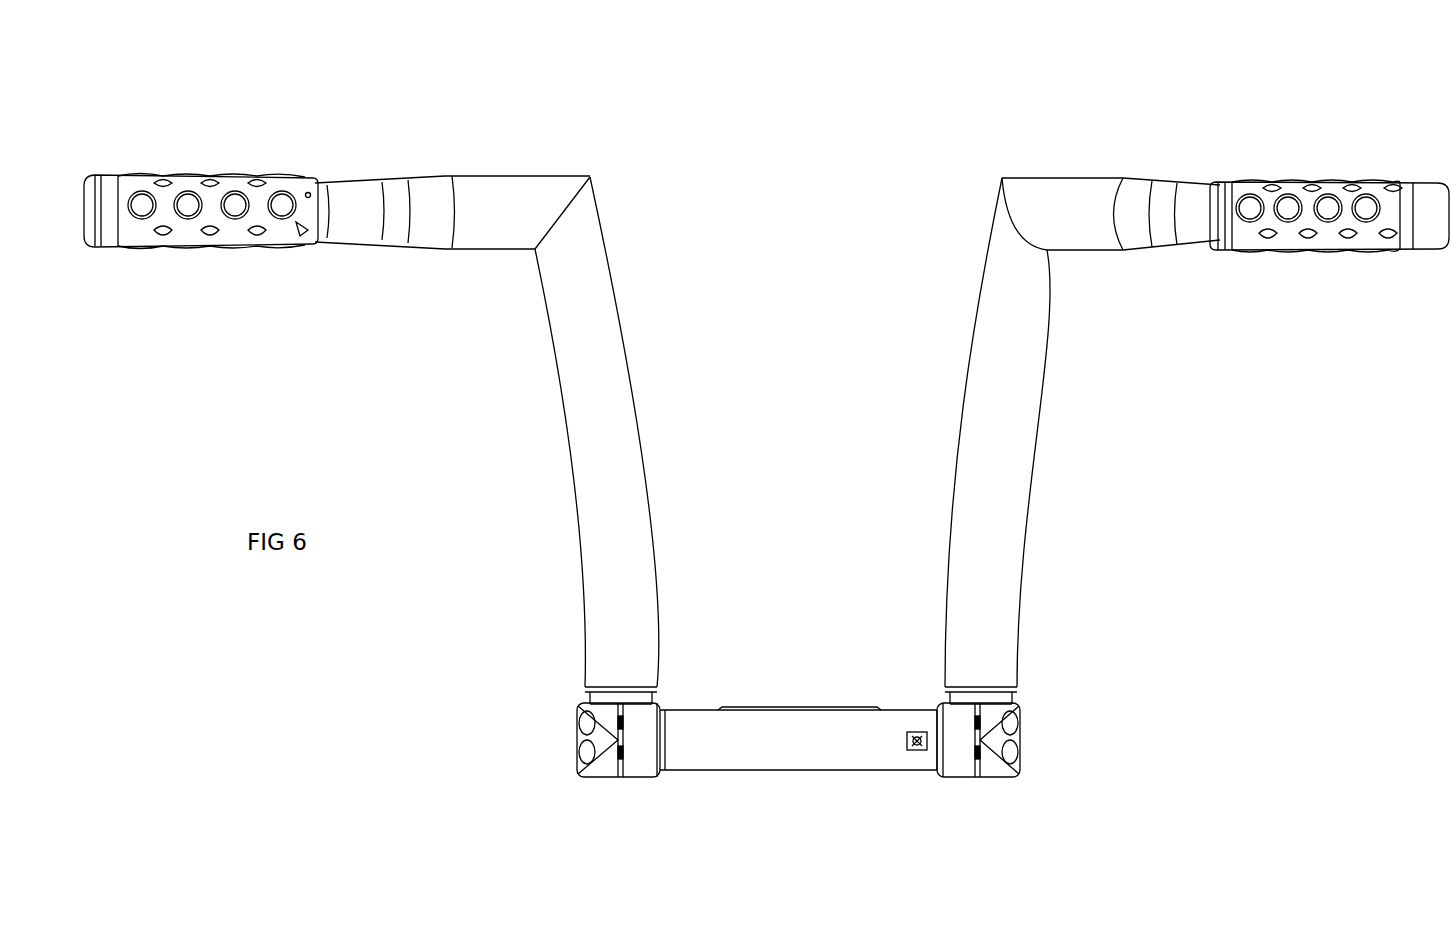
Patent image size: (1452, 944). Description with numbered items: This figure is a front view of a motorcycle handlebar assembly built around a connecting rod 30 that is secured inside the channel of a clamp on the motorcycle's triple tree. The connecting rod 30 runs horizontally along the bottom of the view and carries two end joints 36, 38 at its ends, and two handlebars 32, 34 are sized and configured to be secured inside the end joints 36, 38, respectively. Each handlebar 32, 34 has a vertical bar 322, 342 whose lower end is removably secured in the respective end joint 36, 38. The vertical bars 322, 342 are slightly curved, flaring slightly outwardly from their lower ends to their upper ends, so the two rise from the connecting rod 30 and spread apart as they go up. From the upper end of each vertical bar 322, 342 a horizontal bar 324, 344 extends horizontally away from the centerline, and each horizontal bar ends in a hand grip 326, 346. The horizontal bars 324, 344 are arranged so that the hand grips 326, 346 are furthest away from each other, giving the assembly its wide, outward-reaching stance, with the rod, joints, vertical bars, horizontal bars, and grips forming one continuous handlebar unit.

The connecting rod 30 is at (787, 742).
The handlebar 32 is at (1197, 383).
The vertical bar 322 is at (1012, 528).
The horizontal bar 324 is at (1063, 187).
The hand grip 326 is at (1325, 187).
The handlebar 34 is at (435, 387).
The vertical bar 342 is at (603, 552).
The horizontal bar 344 is at (567, 198).
The hand grip 346 is at (183, 188).
The end joint 36 is at (957, 768).
The end joint 38 is at (638, 748).